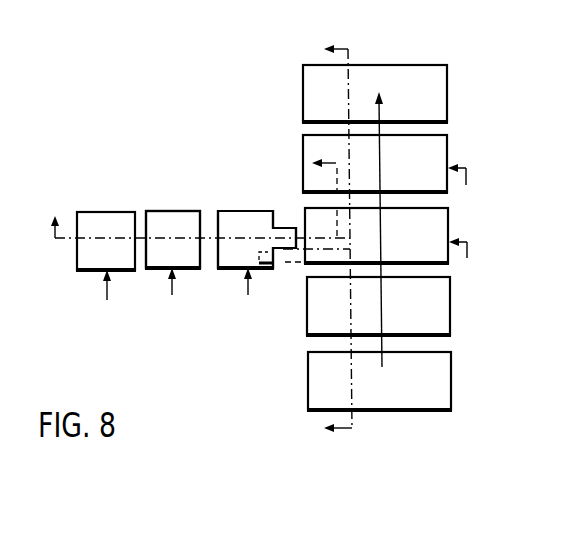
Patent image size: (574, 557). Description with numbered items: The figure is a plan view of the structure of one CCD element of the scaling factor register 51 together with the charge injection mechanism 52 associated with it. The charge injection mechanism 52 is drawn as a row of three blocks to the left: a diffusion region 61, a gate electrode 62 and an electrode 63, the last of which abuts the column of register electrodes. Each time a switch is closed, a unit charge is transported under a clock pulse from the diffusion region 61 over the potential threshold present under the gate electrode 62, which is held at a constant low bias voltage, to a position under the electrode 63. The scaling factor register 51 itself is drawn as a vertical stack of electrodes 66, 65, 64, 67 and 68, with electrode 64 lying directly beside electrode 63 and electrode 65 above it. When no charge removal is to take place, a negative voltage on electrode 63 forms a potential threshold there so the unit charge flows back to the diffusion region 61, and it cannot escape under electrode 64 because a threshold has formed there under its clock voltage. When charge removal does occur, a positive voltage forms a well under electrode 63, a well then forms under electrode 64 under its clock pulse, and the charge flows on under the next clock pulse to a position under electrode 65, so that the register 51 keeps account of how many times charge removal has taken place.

The scaling factor register 51 is at (388, 36).
The charge injection mechanism 52 is at (207, 165).
The diffusion region 61 is at (110, 216).
The gate electrode 62 is at (176, 216).
The electrode 63 is at (253, 216).
The electrode 64 is at (449, 227).
The electrode 65 is at (449, 160).
The upper receiving unit 66 is at (448, 93).
The lower receiving unit 67 is at (450, 304).
The bottom receiving unit 68 is at (451, 381).